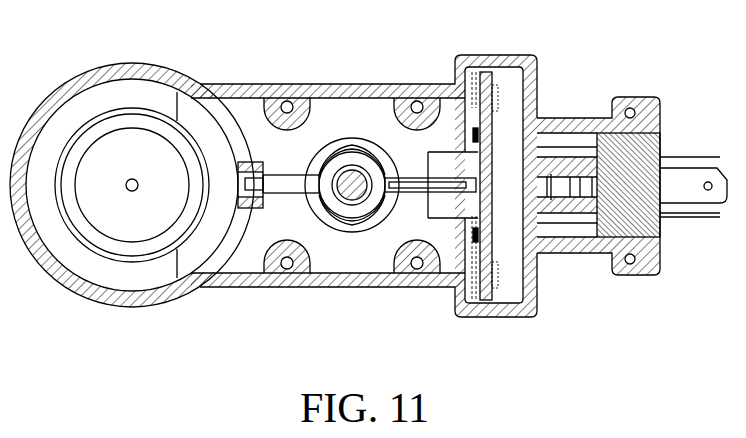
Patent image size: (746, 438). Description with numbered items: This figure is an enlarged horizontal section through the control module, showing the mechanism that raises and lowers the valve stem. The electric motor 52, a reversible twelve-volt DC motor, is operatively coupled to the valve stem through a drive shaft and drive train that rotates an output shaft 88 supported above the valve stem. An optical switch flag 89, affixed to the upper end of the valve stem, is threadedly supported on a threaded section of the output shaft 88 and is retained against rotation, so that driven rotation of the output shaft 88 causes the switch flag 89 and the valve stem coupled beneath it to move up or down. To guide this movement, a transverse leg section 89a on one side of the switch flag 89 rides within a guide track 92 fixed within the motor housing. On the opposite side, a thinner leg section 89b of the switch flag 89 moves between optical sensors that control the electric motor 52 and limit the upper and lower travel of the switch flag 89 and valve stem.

The electric motor 52 is at (136, 216).
The output shaft 88 is at (354, 251).
The optical switch flag 89 is at (361, 128).
The transverse leg section 89a is at (262, 160).
The thinner leg section 89b is at (500, 46).
The guide track 92 is at (250, 287).